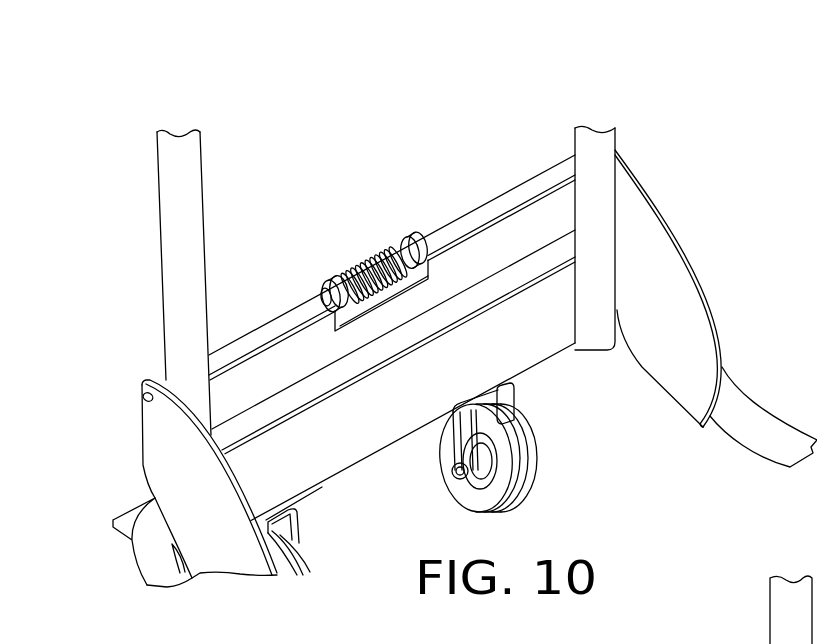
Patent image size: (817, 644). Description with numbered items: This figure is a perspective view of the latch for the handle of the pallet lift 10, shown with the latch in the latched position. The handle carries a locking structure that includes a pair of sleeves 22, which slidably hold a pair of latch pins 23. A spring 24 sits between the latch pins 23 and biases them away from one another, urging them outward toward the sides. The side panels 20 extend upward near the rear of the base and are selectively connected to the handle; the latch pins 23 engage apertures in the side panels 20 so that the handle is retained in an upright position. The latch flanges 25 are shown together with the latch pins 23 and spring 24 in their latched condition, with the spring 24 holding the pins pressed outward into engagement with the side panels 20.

The pallet lift 10 is at (683, 132).
The side panel 20 is at (688, 245).
The sleeve 22 is at (273, 322).
The latch pin 23 is at (143, 399).
The spring 24 is at (372, 262).
The latch flange 25 is at (330, 276).